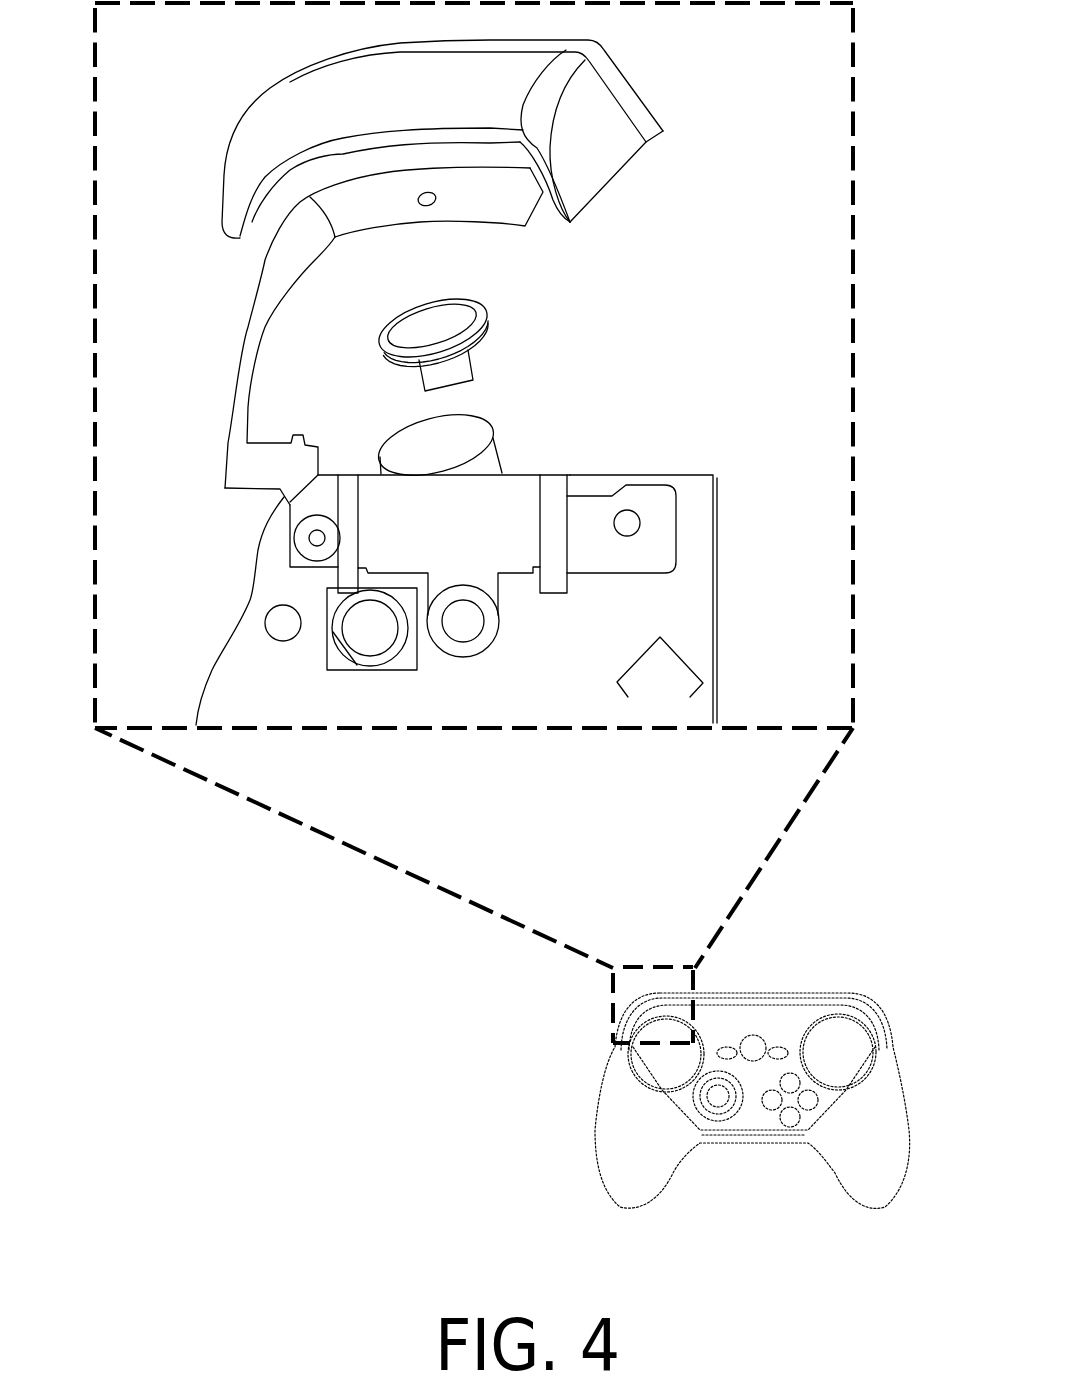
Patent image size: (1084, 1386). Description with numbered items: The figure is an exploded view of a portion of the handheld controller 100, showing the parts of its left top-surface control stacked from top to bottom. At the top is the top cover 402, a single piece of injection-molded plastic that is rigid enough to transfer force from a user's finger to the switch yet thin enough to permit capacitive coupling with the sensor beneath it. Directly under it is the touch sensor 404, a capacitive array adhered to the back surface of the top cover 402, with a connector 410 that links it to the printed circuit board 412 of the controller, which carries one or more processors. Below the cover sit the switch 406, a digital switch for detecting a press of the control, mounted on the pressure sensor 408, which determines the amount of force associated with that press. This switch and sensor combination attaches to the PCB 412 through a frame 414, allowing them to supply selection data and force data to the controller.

The handheld controller 100 is at (845, 931).
The top cover 402 is at (664, 104).
The touch sensor 404 is at (521, 238).
The switch 406 is at (518, 332).
The pressure sensor 408 is at (490, 356).
The connector 410 is at (240, 514).
The printed circuit board (PCB) 412 is at (690, 596).
The frame 414 is at (513, 504).